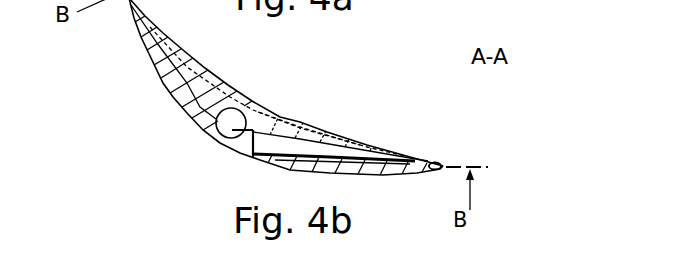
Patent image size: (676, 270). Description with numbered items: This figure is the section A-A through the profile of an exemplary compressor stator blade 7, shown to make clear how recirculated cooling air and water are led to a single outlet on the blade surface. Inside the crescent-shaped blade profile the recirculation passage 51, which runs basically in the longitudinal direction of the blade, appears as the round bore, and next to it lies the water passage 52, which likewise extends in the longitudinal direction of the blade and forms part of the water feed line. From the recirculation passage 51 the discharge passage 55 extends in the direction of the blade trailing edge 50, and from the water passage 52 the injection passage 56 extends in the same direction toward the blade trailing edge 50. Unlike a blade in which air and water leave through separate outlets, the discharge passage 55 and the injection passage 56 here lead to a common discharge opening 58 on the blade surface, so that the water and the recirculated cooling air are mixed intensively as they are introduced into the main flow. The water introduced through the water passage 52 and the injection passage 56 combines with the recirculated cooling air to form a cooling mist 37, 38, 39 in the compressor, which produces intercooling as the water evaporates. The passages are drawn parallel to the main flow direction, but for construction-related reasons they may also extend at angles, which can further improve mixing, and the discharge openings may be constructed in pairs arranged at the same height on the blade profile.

The compressor stator blade 7 is at (238, 56).
The recirculation passage 51 is at (256, 109).
The water passage 52 is at (257, 159).
The discharge passage 55 is at (295, 125).
The injection passage 56 is at (282, 168).
The discharge opening 58 is at (378, 150).
The cooling mist 37 is at (430, 158).
The cooling mist 38 is at (488, 133).
The cooling mist 39 is at (506, 133).
The blade trailing edge 50 is at (455, 164).